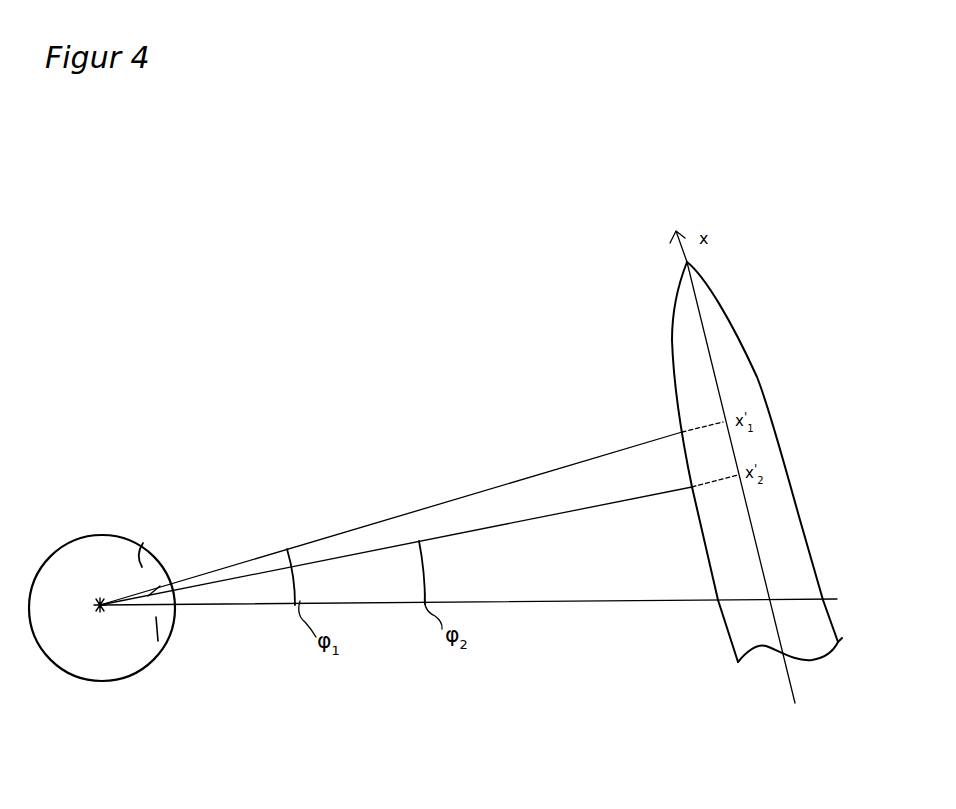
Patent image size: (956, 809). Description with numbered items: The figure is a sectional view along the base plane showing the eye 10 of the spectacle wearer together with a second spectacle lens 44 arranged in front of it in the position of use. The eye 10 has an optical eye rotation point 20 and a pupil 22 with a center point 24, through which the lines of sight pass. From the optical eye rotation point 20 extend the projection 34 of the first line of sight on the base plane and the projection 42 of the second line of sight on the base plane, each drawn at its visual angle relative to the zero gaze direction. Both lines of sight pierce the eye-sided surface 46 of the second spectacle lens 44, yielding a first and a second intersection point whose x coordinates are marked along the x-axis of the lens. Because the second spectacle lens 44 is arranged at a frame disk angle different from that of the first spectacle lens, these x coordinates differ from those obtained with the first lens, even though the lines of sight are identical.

The eye 10 is at (90, 556).
The optical eye rotation point 20 is at (92, 612).
The pupil 22 is at (157, 612).
The center point 24 is at (152, 590).
The projection of the first line of sight 34 is at (490, 488).
The projection of the second line of sight 42 is at (505, 531).
The second spectacle lens 44 is at (742, 382).
The eye-sided surface 46 is at (672, 340).